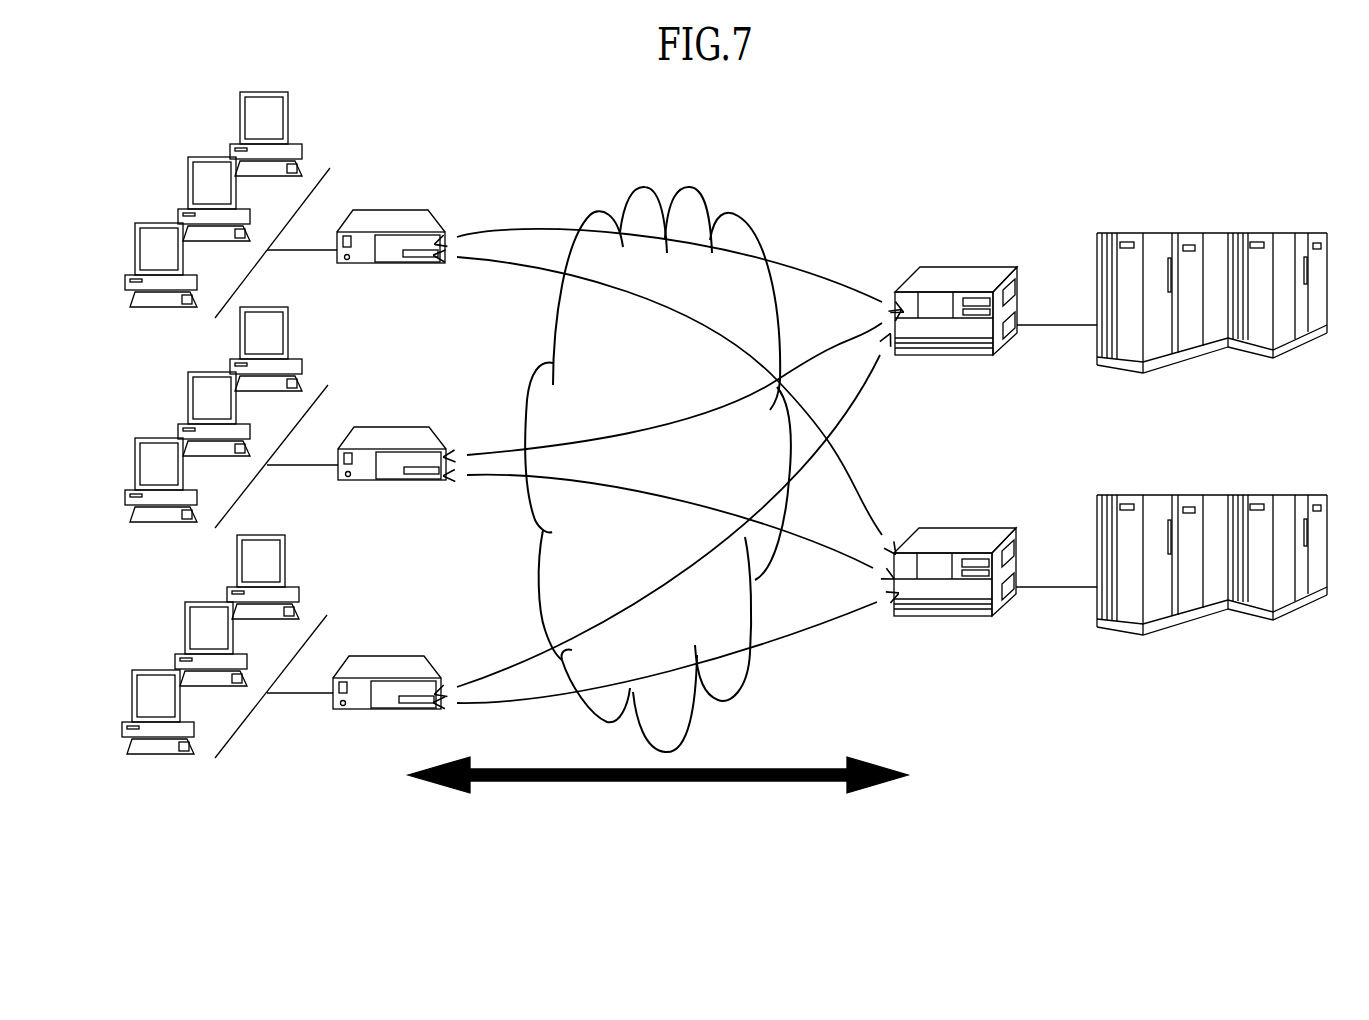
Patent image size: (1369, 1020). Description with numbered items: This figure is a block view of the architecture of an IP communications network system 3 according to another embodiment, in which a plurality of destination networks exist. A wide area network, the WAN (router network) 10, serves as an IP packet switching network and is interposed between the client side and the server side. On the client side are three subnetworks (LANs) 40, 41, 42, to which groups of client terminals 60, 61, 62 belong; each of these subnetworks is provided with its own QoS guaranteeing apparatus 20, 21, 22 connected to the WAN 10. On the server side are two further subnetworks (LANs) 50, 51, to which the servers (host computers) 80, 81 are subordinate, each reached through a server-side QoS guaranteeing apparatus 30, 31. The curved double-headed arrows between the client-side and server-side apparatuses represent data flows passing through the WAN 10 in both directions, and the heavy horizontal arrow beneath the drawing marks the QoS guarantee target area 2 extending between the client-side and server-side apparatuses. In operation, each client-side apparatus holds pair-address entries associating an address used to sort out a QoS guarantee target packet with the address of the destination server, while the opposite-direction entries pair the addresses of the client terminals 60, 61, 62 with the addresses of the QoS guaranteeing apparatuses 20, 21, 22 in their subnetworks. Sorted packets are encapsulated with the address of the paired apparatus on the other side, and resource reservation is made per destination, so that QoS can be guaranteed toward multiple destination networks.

The QoS guarantee target area 2 is at (658, 788).
The IP communications network system 3 is at (557, 124).
The WAN (router network) 10 is at (598, 213).
The QoS guaranteeing apparatus 20 is at (370, 217).
The QoS guaranteeing apparatus 21 is at (363, 430).
The QoS guaranteeing apparatus 22 is at (360, 660).
The QoS guaranteeing apparatus 30 is at (931, 270).
The QoS guaranteeing apparatus 31 is at (937, 532).
The subnetwork (LAN) 40 is at (313, 175).
The subnetwork (LAN) 41 is at (313, 387).
The subnetwork (LAN) 42 is at (313, 620).
The subnetwork (LAN) 50 is at (1048, 327).
The subnetwork (LAN) 51 is at (1050, 590).
The client terminal 60 is at (189, 199).
The client terminal 61 is at (188, 414).
The client terminal 62 is at (185, 644).
The server (host computer) 80 is at (1178, 363).
The server (host computer) 81 is at (1175, 627).